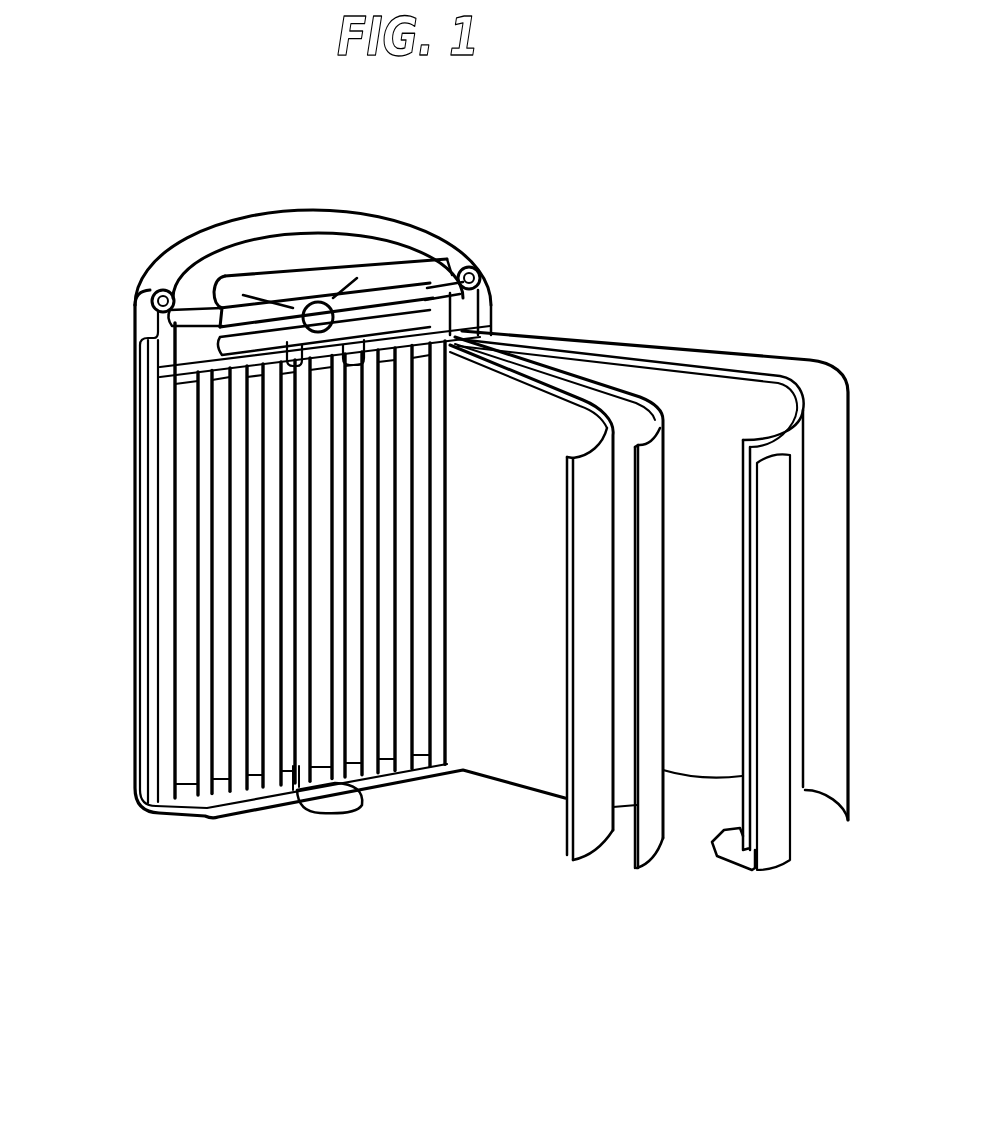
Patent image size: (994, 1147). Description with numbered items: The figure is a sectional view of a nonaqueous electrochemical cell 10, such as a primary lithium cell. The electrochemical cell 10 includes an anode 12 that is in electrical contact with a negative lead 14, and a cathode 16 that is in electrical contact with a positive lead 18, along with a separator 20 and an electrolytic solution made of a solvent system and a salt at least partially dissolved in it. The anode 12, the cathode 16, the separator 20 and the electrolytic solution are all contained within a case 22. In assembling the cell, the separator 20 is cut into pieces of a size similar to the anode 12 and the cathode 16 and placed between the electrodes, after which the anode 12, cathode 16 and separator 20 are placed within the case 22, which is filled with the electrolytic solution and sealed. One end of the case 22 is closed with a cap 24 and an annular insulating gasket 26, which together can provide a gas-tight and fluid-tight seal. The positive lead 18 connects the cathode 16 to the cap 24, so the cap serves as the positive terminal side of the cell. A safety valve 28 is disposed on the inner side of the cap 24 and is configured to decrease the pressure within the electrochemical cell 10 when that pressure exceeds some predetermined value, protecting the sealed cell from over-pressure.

The electrochemical cell 10 is at (719, 222).
The anode 12 is at (798, 806).
The negative lead 14 is at (773, 850).
The cathode 16 is at (593, 845).
The positive lead 18 is at (340, 335).
The separator 20 is at (658, 450).
The case 22 is at (152, 815).
The cap 24 is at (305, 245).
The annular insulating gasket 26 is at (160, 300).
The safety valve 28 is at (385, 295).